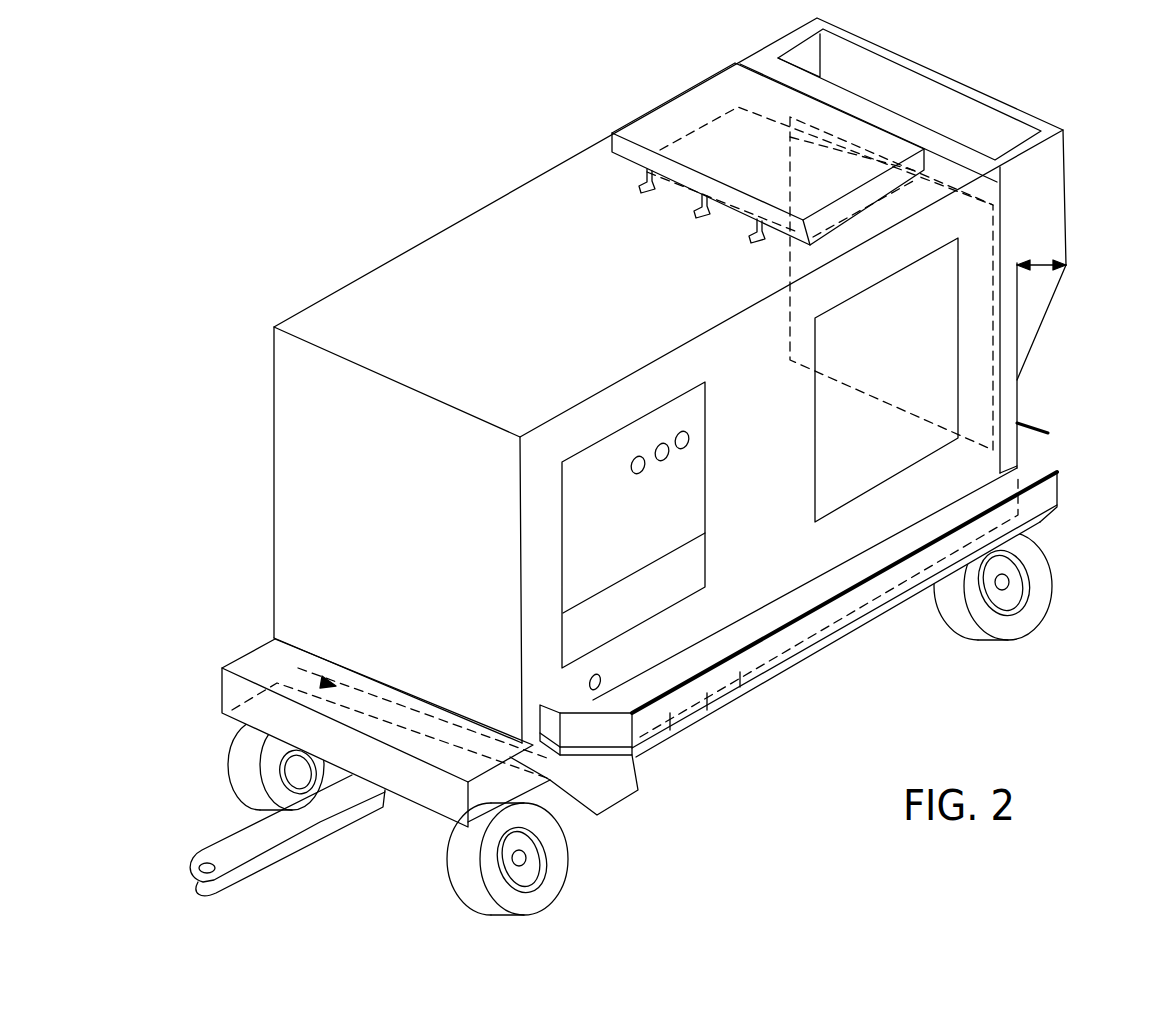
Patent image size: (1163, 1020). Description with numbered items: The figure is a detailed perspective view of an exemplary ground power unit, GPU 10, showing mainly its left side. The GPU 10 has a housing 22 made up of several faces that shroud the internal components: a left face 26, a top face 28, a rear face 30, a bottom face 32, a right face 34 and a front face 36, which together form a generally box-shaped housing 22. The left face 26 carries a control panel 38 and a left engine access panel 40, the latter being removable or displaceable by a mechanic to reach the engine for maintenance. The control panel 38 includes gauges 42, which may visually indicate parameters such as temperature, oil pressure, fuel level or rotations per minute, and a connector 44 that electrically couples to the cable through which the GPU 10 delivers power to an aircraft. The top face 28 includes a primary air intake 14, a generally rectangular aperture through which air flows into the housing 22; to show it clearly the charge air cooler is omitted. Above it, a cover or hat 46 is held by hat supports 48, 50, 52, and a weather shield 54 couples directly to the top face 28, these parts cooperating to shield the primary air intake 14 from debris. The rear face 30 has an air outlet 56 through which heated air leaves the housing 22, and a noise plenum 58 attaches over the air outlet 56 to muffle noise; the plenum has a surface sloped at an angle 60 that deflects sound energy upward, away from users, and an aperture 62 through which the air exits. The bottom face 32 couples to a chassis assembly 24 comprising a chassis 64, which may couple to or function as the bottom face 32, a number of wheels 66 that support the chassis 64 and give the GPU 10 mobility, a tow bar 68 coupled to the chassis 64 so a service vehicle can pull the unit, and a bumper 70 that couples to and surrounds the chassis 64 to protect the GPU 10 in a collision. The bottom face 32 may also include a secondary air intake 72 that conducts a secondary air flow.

The GPU 10 is at (304, 228).
The primary air intake 14 is at (688, 133).
The housing 22 is at (1025, 384).
The chassis assembly 24 is at (745, 690).
The left face 26 is at (755, 605).
The top face 28 is at (405, 267).
The rear face 30 is at (1027, 435).
The bottom face 32 is at (673, 727).
The right face 34 is at (290, 358).
The front face 36 is at (290, 540).
The control panel 38 is at (716, 489).
The left engine access panel 40 is at (892, 457).
The gauges 42 is at (657, 442).
The connector 44 is at (588, 680).
The hat 46 is at (635, 128).
The hat support 48 is at (640, 188).
The hat support 50 is at (697, 214).
The hat support 52 is at (752, 240).
The weather shield 54 is at (868, 212).
The air outlet 56 is at (988, 352).
The noise plenum 58 is at (1058, 297).
The angle 60 is at (1040, 262).
The aperture 62 is at (792, 48).
The chassis 64 is at (708, 702).
The wheels 66 is at (236, 768).
The tow bar 68 is at (298, 855).
The bumper 70 is at (1052, 490).
The secondary air intake 72 is at (266, 666).